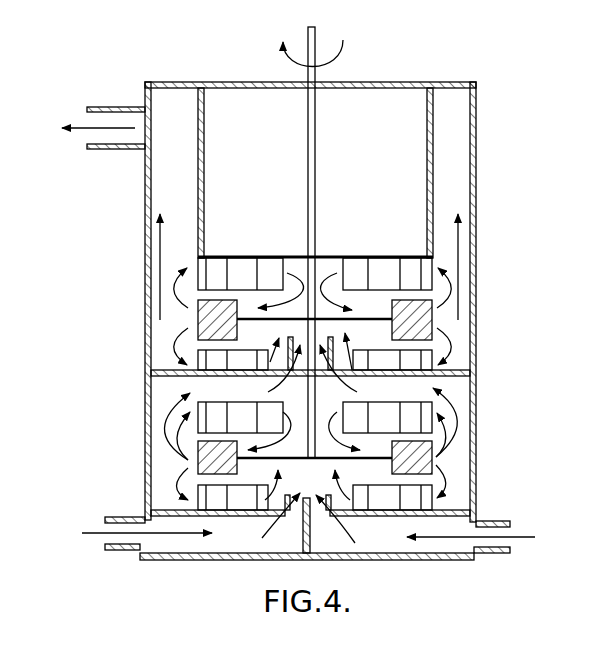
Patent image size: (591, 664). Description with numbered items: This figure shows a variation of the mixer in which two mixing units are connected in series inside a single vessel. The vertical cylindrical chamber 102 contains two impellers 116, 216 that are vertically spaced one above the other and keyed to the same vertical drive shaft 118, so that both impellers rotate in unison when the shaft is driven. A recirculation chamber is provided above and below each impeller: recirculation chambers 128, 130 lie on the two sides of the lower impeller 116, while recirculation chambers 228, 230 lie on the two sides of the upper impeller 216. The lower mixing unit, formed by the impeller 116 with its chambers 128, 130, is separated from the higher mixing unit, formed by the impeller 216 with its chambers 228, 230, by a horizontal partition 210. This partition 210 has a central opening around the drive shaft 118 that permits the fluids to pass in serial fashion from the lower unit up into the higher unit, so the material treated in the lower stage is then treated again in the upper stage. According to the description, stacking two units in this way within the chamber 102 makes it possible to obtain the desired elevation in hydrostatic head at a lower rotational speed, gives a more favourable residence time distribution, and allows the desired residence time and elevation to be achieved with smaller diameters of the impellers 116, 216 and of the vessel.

The vertical cylindrical chamber 102 is at (477, 170).
The vertical drive shaft 118 is at (313, 178).
The horizontal partition 210 is at (458, 378).
The recirculation chamber 230 is at (203, 266).
The impeller 216 is at (195, 322).
The recirculation chamber 228 is at (200, 372).
The recirculation chamber 130 is at (200, 427).
The impeller 116 is at (190, 460).
The recirculation chamber 128 is at (200, 505).